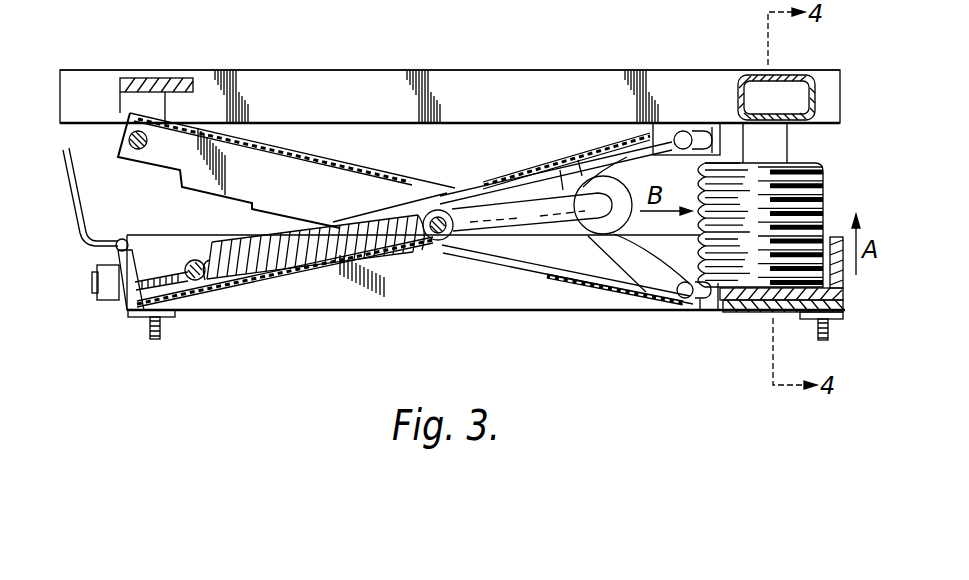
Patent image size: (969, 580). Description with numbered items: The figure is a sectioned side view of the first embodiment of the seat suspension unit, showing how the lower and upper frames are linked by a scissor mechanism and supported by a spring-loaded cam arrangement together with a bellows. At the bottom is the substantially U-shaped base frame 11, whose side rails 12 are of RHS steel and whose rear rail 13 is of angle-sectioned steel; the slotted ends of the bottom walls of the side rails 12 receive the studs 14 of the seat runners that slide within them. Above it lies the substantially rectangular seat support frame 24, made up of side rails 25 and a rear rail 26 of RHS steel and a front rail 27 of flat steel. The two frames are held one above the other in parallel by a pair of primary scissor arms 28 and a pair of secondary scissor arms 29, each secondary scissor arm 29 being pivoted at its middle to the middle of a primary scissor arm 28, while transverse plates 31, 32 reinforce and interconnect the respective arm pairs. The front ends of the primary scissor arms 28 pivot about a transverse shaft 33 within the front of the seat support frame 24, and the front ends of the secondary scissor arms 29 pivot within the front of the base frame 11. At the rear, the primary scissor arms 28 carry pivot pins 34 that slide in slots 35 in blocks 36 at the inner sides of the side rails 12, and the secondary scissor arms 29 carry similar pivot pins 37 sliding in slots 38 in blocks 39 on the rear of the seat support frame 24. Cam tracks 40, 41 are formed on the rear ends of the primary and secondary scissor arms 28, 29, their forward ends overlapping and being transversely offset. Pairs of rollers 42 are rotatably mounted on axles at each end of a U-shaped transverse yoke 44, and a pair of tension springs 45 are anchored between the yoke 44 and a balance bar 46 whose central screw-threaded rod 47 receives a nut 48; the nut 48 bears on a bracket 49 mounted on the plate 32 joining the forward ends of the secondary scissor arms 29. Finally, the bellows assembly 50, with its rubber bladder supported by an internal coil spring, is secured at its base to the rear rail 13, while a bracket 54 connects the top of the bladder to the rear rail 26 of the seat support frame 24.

The base frame 11 is at (386, 320).
The side rails 12 is at (447, 300).
The rear rail 13 is at (788, 312).
The studs 14 is at (161, 330).
The seat support frame 24 is at (439, 62).
The side rails 25 is at (305, 95).
The rear rail 26 is at (803, 75).
The front rail 27 is at (160, 78).
The primary scissor arms 28 is at (286, 205).
The secondary scissor arms 29 is at (452, 205).
The transverse plate 31 is at (238, 130).
The transverse plate 32 is at (503, 172).
The transverse shaft 33 is at (136, 152).
The pivot pins 34 is at (680, 302).
The slots 35 is at (702, 302).
The blocks 36 is at (716, 312).
The pivot pins 37 is at (680, 130).
The slots 38 is at (700, 132).
The blocks 39 is at (716, 126).
The cam track 40 is at (585, 268).
The cam track 41 is at (584, 172).
The rollers 42 is at (580, 226).
The yoke 44 is at (430, 240).
The tension springs 45 is at (323, 272).
The balance bar 46 is at (200, 280).
The screw-threaded rod 47 is at (100, 262).
The nut 48 is at (110, 298).
The bracket 49 is at (122, 312).
The bellows assembly 50 is at (834, 203).
The bracket 54 is at (775, 145).